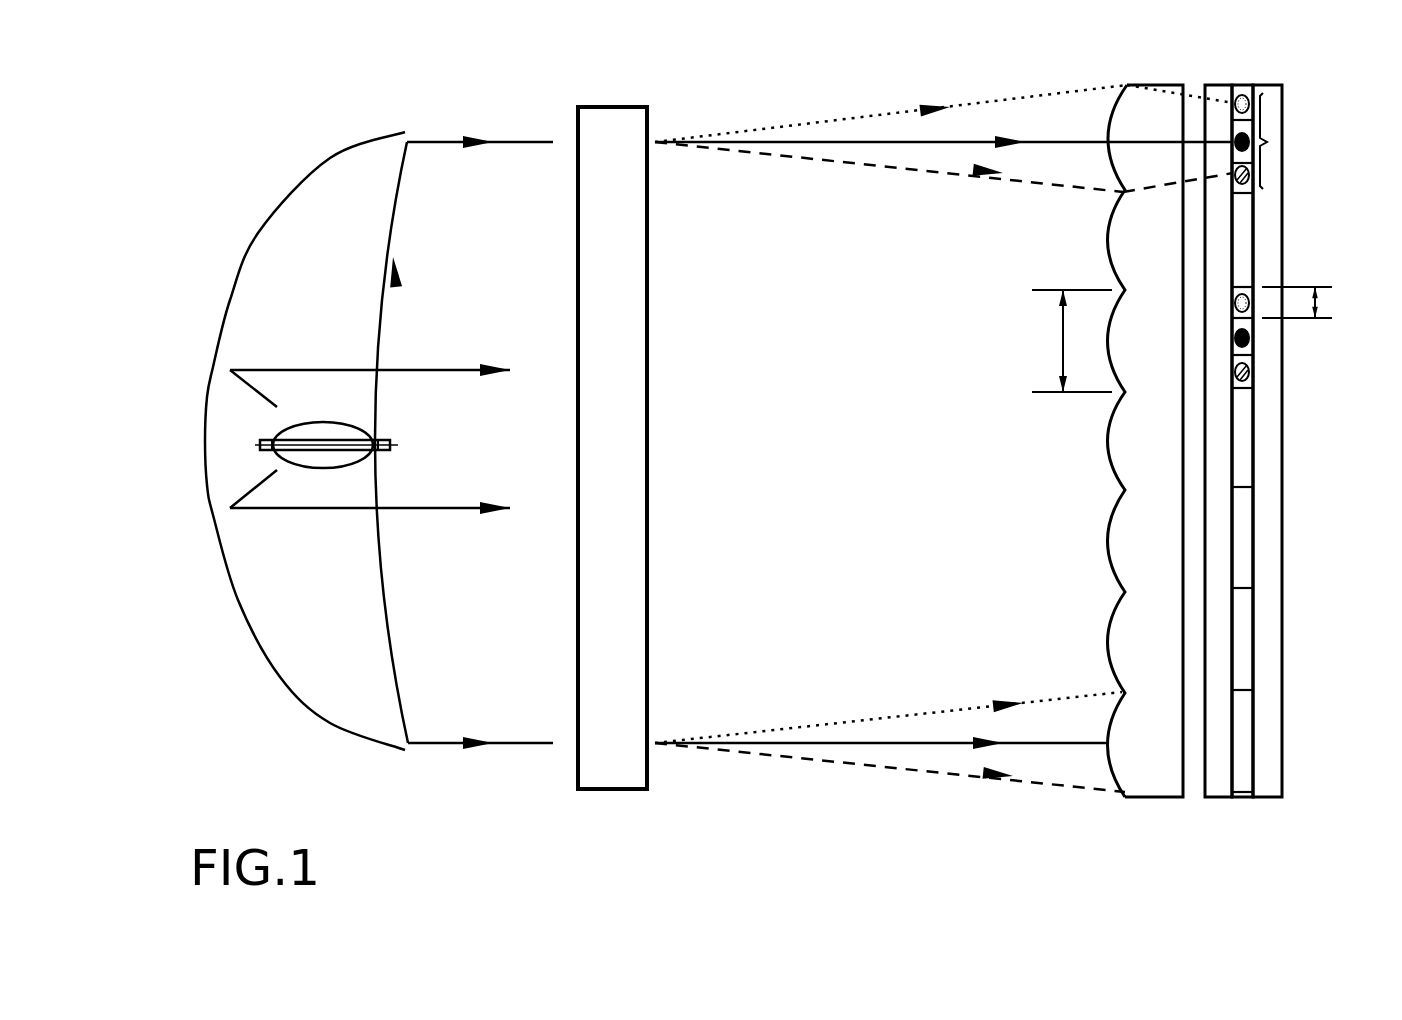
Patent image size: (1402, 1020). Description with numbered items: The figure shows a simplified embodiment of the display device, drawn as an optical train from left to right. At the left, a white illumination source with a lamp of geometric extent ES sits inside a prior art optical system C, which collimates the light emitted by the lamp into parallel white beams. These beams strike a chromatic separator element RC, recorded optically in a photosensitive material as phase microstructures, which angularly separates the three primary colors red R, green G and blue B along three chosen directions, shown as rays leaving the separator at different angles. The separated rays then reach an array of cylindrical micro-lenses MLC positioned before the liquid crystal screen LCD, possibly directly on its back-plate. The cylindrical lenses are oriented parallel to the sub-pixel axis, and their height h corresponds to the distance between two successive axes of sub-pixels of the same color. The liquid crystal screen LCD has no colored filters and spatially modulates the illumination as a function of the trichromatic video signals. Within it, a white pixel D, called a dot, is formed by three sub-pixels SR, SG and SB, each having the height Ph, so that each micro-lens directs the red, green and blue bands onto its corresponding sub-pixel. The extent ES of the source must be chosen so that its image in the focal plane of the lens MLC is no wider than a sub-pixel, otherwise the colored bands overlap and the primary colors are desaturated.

The optical system C is at (250, 626).
The geometric extent of the illumination source ES is at (272, 455).
The chromatic separator element RC is at (600, 765).
The red primary color R is at (944, 407).
The green primary color G is at (944, 433).
The blue primary color B is at (944, 467).
The array of cylindrical micro-lenses MLC is at (1150, 768).
The height of the cylindrical lenses h is at (1072, 341).
The liquid crystal screen LCD is at (1205, 805).
The red sub-pixel SR is at (1243, 96).
The green sub-pixel SG is at (1247, 149).
The blue sub-pixel SB is at (1250, 190).
The white pixel D is at (1268, 142).
The height of a sub-pixel Ph is at (1320, 300).